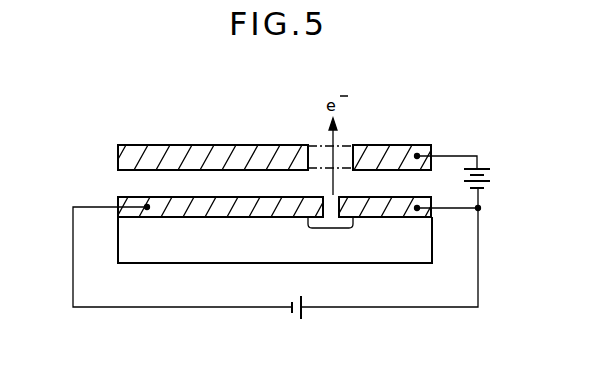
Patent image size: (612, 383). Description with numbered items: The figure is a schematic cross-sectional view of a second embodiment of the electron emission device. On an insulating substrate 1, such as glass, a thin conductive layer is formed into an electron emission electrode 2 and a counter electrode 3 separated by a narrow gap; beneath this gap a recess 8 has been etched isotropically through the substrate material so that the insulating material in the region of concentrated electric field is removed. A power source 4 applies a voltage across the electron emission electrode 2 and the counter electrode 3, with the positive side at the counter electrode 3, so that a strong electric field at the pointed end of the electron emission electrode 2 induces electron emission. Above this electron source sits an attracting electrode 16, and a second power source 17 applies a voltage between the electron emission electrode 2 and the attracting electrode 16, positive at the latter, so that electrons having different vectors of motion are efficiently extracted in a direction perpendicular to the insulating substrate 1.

The insulating substrate 1 is at (189, 252).
The electron emission electrode 2 is at (138, 203).
The counter electrode 3 is at (409, 203).
The power source 4 is at (303, 314).
The recess 8 is at (338, 223).
The attracting electrode 16 is at (396, 153).
The power source 17 is at (482, 165).